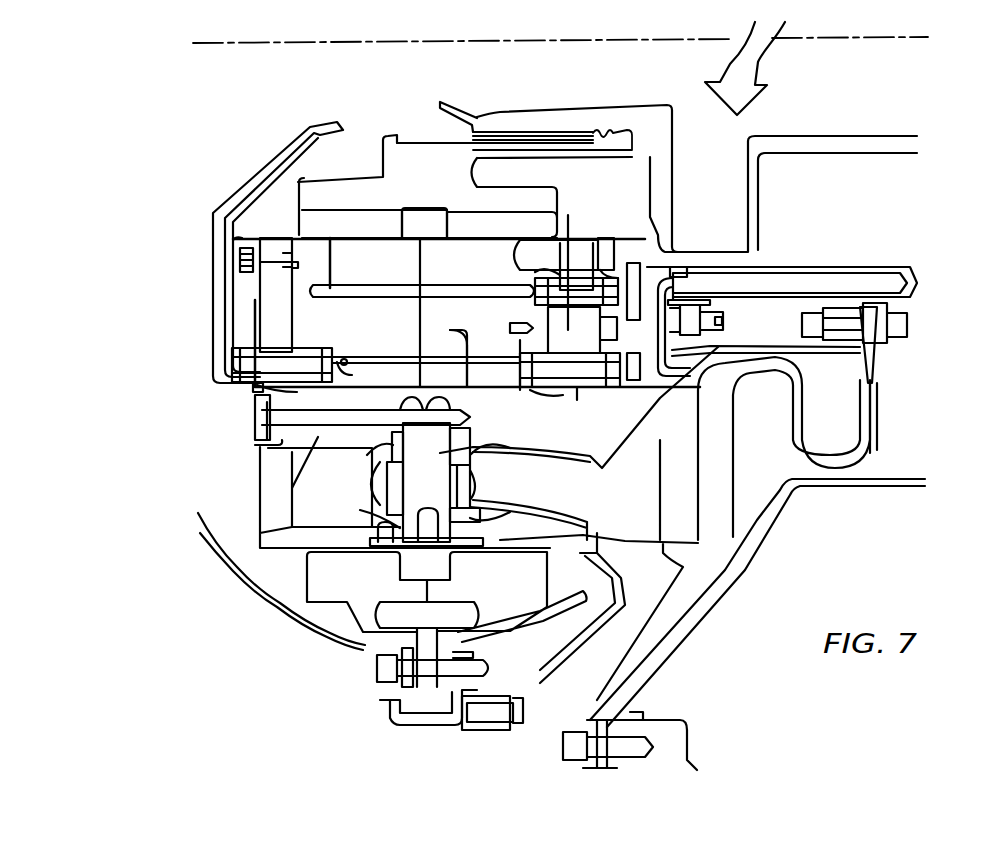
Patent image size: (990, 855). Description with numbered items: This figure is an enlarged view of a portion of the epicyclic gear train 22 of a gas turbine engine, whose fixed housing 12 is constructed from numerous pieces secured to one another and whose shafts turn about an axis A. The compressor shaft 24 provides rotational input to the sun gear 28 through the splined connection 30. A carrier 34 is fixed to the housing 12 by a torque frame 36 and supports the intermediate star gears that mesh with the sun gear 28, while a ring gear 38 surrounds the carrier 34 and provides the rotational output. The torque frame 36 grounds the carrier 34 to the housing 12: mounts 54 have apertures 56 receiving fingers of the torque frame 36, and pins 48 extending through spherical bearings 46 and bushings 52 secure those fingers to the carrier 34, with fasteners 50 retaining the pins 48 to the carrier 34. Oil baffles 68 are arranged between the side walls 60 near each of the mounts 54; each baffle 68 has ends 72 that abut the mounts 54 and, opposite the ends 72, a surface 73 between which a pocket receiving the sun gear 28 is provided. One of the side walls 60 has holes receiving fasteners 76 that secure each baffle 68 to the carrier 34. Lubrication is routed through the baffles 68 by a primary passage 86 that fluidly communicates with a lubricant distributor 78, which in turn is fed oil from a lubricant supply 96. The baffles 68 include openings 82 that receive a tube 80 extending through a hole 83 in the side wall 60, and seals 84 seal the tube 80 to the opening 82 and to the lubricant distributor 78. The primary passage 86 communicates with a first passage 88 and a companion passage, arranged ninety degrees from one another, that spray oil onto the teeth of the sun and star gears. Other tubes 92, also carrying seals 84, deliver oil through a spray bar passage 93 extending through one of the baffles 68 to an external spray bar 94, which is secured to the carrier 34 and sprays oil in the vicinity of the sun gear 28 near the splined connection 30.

The axis A is at (374, 42).
The fixed housing 12 is at (797, 410).
The epicyclic gear train 22 is at (554, 68).
The compressor shaft 24 is at (605, 110).
The sun gear 28 is at (460, 186).
The splined connection 30 is at (513, 132).
The carrier 34 is at (270, 545).
The torque frame 36 is at (613, 514).
The ring gear 38 is at (363, 608).
The spherical bearings 46 is at (470, 493).
The pins 48 is at (435, 458).
The fasteners 50 is at (256, 427).
The bushings 52 is at (373, 473).
The mounts 54 is at (293, 486).
The apertures 56 is at (334, 516).
The side walls 60 is at (262, 300).
The oil baffles 68 is at (415, 332).
The ends 72 is at (467, 368).
The surface 73 is at (414, 240).
The fasteners 76 is at (568, 215).
The lubricant distributor 78 is at (645, 338).
The tube 80 is at (613, 262).
The openings 82 is at (533, 296).
The hole 83 is at (538, 271).
The seals 84 is at (250, 345).
The primary passage 86 is at (400, 292).
The first passage 88 is at (373, 255).
The tubes 92 is at (252, 395).
The spray bar passage 93 is at (343, 360).
The external spray bar 94 is at (212, 313).
The lubricant supply 96 is at (637, 375).